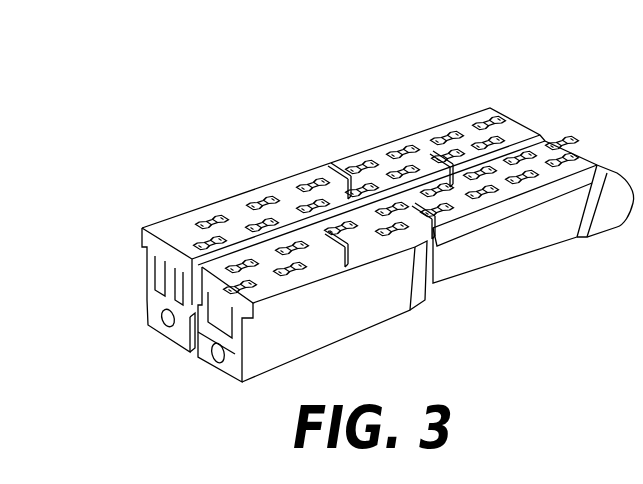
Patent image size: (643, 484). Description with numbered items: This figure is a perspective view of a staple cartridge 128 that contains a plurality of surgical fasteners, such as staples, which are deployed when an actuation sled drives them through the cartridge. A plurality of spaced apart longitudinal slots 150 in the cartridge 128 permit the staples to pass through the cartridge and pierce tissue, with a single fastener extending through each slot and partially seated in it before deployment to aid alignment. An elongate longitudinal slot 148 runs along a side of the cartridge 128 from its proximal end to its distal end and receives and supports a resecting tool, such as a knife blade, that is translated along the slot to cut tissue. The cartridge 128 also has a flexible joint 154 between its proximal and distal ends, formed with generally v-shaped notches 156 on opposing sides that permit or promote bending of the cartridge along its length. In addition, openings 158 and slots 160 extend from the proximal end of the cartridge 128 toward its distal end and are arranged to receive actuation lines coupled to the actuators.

The cartridge 128 is at (441, 117).
The elongate longitudinal slot 148 is at (381, 188).
The longitudinal slots 150 is at (567, 150).
The flexible joint 154 is at (457, 338).
The notches 156 is at (328, 175).
The openings 158 is at (152, 306).
The slots 160 is at (191, 336).